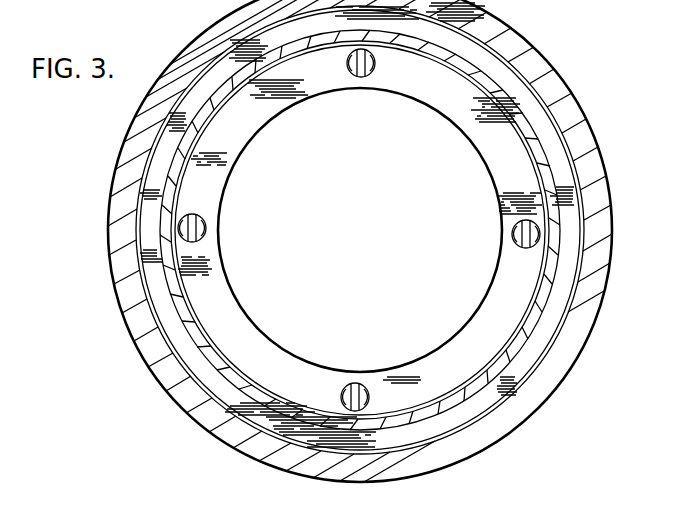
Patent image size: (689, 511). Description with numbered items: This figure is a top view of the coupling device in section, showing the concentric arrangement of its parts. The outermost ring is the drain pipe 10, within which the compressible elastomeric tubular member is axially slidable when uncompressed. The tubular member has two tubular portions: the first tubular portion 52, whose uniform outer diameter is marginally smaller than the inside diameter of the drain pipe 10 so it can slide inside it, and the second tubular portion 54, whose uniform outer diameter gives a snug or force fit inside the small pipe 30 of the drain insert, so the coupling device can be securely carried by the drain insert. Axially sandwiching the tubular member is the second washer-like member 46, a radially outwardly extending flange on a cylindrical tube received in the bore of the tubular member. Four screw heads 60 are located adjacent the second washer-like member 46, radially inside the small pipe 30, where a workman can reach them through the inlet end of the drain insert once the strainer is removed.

The drain pipe 10 is at (197, 410).
The small pipe 30 is at (197, 372).
The second washer-like member 46 is at (222, 273).
The first tubular portion 52 is at (175, 395).
The second tubular portion 54 is at (184, 290).
The screw heads 60 is at (180, 222).